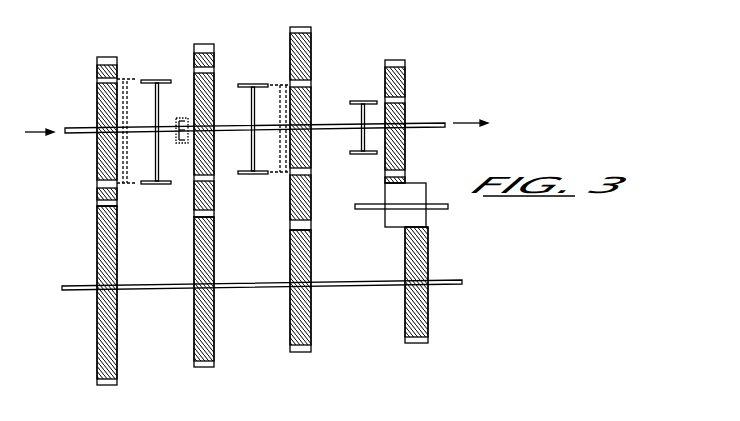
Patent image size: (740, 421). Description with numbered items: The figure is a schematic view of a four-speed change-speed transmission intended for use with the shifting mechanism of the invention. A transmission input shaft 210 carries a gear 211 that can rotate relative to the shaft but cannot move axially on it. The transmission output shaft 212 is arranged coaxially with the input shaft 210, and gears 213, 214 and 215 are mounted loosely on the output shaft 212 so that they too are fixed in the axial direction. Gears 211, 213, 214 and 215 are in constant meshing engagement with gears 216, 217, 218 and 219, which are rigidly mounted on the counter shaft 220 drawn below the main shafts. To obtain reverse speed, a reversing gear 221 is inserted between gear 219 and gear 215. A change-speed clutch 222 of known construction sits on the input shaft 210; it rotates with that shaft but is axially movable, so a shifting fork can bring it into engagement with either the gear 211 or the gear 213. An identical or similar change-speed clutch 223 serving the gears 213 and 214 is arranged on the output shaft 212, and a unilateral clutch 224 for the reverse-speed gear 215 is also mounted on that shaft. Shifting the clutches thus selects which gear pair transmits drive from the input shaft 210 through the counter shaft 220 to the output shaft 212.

The transmission input shaft 210 is at (91, 133).
The gear 211 is at (97, 70).
The transmission output shaft 212 is at (408, 126).
The gear 213 is at (208, 74).
The gear 214 is at (303, 62).
The gear 215 is at (396, 80).
The gear 216 is at (99, 334).
The gear 217 is at (197, 333).
The gear 218 is at (295, 331).
The gear 219 is at (412, 325).
The counter shaft 220 is at (440, 284).
The reversing gear 221 is at (401, 220).
The change-speed clutch 222 is at (166, 64).
The change-speed clutch 223 is at (246, 84).
The unilateral clutch 224 is at (363, 101).